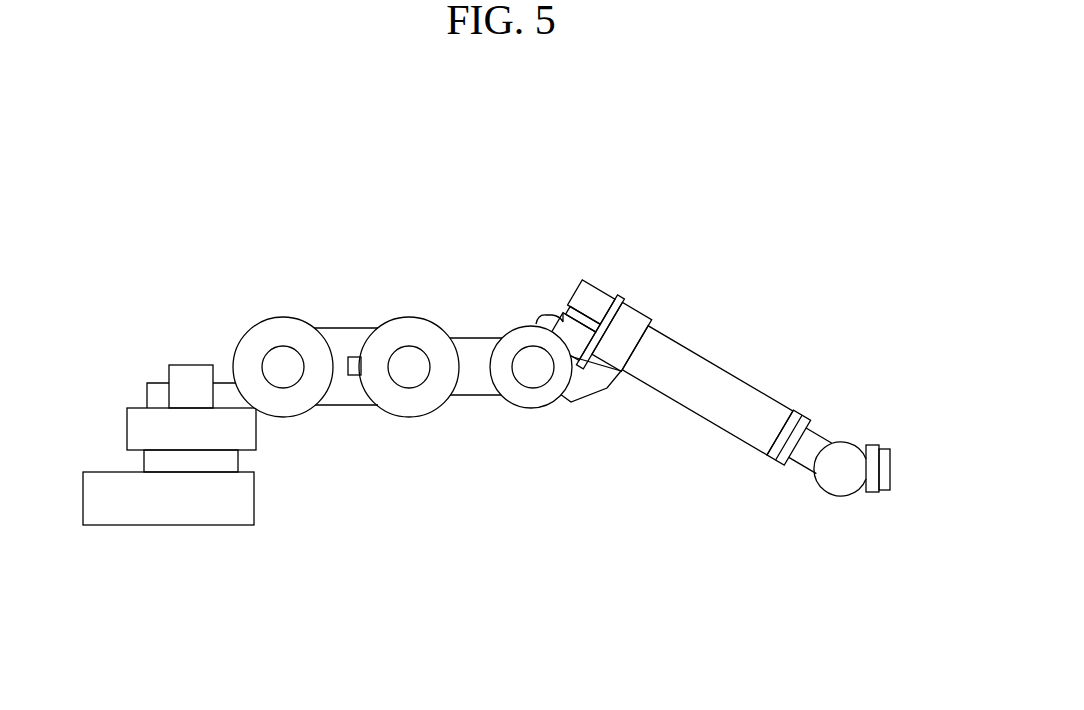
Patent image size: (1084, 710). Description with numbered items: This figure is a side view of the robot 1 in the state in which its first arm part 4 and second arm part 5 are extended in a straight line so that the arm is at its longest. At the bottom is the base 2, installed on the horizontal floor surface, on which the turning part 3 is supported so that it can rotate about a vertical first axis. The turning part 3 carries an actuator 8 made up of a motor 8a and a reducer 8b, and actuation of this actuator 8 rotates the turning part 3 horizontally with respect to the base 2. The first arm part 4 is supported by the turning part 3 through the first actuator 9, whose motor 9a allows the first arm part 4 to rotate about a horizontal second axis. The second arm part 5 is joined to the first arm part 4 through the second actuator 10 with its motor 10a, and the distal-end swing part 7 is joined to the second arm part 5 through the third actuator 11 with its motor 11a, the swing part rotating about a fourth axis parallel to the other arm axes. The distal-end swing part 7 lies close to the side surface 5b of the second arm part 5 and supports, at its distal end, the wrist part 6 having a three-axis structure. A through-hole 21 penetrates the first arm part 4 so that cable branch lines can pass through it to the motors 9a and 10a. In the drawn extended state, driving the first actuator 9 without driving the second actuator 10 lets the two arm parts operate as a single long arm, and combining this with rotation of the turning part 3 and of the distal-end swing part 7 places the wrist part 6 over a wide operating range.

The robot 1 is at (666, 146).
The base 2 is at (110, 543).
The turning part 3 is at (114, 413).
The first arm part 4 is at (346, 359).
The second arm part 5 is at (476, 348).
The side surface 5b is at (477, 380).
The wrist part 6 is at (907, 467).
The distal-end swing part 7 is at (708, 365).
The actuator 8 is at (182, 334).
The motor 8a is at (201, 365).
The reducer 8b is at (142, 458).
The first actuator 9 is at (283, 380).
The motor 9a is at (281, 346).
The second actuator 10 is at (409, 379).
The motor 10a is at (409, 346).
The third actuator 11 is at (531, 361).
The motor 11a is at (536, 389).
The through-hole 21 is at (354, 377).